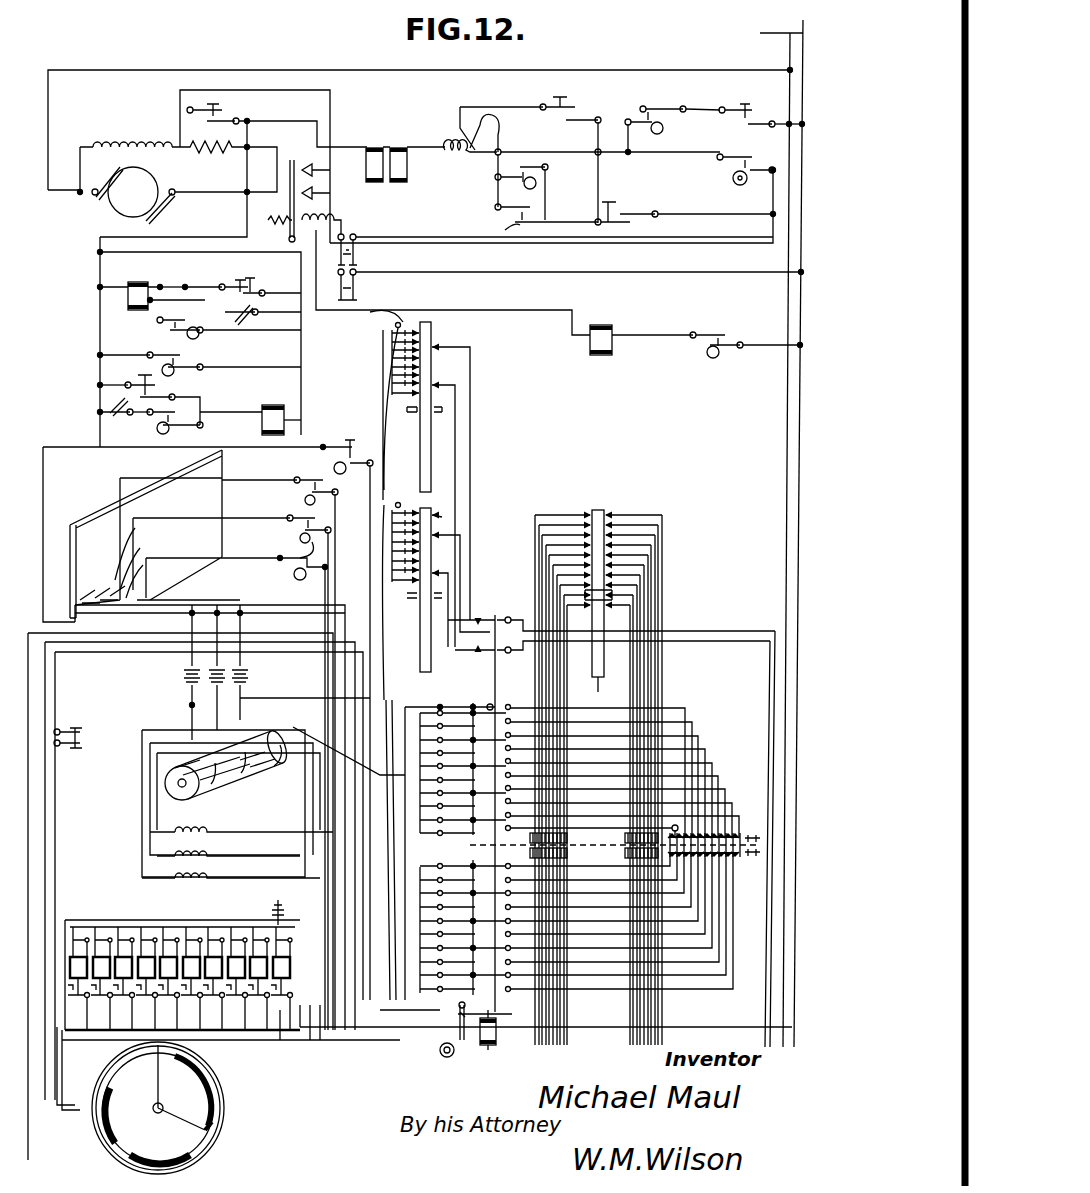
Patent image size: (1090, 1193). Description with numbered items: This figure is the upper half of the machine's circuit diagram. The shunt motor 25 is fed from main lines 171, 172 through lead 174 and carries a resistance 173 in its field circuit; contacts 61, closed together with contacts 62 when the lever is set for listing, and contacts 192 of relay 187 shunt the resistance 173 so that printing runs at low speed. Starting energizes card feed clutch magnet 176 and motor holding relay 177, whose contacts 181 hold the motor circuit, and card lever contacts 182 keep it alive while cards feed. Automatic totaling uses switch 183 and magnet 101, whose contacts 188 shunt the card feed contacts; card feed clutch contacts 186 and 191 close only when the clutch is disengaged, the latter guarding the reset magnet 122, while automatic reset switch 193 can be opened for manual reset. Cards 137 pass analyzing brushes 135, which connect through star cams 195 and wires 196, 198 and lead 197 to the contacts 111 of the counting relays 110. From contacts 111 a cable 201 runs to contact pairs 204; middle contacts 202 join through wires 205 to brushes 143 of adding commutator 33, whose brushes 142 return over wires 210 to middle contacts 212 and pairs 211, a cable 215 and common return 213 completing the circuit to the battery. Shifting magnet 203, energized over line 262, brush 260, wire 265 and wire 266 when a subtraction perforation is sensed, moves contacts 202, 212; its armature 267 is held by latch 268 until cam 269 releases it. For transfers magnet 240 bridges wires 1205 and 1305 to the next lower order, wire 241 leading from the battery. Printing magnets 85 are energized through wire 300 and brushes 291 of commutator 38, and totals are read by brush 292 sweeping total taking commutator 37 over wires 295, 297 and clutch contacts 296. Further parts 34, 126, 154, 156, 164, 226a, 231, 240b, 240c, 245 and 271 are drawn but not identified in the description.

The lead 174 is at (326, 72).
The main line 171 is at (786, 442).
The main line 172 is at (760, 33).
The contacts 61 is at (222, 112).
The motor 25 is at (150, 182).
The resistance 173 is at (209, 163).
The contacts 192 is at (310, 182).
The relay 187 is at (333, 214).
The card feed clutch contacts 186 is at (355, 251).
The card feed clutch contacts 191 is at (352, 298).
The card feed clutch magnet 176 is at (412, 175).
The motor holding relay 177 is at (460, 158).
The contacts 181 is at (470, 128).
The card lever contacts 182 is at (512, 215).
The line 262 is at (100, 265).
The magnet 101 is at (135, 302).
The contacts 188 is at (168, 322).
The switch 183 is at (263, 319).
The automatic reset switch 193 is at (130, 430).
The reset magnet 122 is at (286, 424).
The wire 265 is at (268, 448).
The cards 137 is at (83, 515).
The analyzing brushes 135 is at (140, 560).
The star cams 195 is at (300, 490).
The wire 196 is at (325, 590).
The analyzing brush 260 is at (210, 815).
The wire 241 is at (292, 640).
The lead 198 is at (333, 680).
The wire 295 is at (106, 655).
The card feed clutch contacts 296 is at (82, 740).
The wire 297 is at (57, 875).
The commutator 38 is at (268, 762).
The brushes 291 is at (192, 745).
The cable 215 is at (318, 872).
The common return 213 is at (305, 797).
The printing magnets 85 is at (213, 880).
The wire 231 is at (310, 826).
The wire 300 is at (246, 860).
The contact 126 is at (280, 895).
The relay magnets 110 is at (62, 930).
The cable 201 is at (232, 1035).
The contacts 111 is at (62, 1085).
The total taking commutator 37 is at (203, 1090).
The brush 292 is at (215, 1118).
The lead 197 is at (285, 1050).
The wire 266 is at (372, 641).
The magnet 203 is at (498, 1040).
The armature 267 is at (515, 1025).
The latch 268 is at (455, 1015).
The cam 269 is at (443, 1058).
The contact bar 34 is at (428, 332).
The contacts 164 is at (415, 512).
The wire 156 is at (455, 415).
The wire 154 is at (470, 450).
The wire 271 is at (432, 513).
The wires 210 is at (560, 670).
The middle contacts 212 is at (493, 710).
The contact pairs 211 is at (460, 710).
The wire 226a is at (380, 712).
The contact pairs 204 is at (448, 845).
The middle contacts 202 is at (495, 872).
The wire 1305 is at (578, 772).
The wire 1205 is at (603, 888).
The magnet 240 is at (614, 342).
The relay coil 240c is at (594, 838).
The relay coil 240b is at (594, 855).
The relay contacts 245 is at (740, 865).
The brushes 142 is at (592, 512).
The brushes 143 is at (608, 512).
The adding commutator 33 is at (598, 652).
The wires 205 is at (640, 605).
The contacts 62 is at (730, 118).